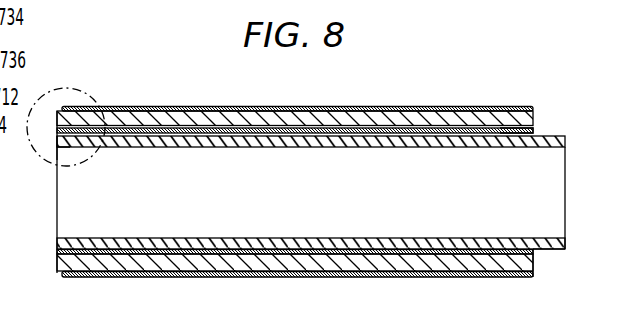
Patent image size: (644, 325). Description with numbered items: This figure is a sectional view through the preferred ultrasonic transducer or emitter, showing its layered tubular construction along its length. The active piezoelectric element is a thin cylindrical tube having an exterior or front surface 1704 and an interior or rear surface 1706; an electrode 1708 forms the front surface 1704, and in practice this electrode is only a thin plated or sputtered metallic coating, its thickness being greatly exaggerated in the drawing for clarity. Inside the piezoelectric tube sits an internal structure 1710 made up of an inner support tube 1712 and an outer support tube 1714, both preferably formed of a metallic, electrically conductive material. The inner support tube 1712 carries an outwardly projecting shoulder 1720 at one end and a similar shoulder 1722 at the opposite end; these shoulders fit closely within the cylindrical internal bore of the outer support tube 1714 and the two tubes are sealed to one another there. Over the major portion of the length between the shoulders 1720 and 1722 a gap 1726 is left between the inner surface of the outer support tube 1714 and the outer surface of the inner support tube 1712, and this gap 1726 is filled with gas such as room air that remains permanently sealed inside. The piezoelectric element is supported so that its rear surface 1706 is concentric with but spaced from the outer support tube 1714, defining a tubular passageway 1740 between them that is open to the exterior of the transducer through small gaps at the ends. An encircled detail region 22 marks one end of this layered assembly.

The detail region 22 is at (97, 98).
The exterior or front surface 1704 is at (477, 111).
The interior or rear surface 1706 is at (513, 128).
The electrode 1708 is at (403, 110).
The internal structure 1710 is at (44, 254).
The inner support tube 1712 is at (552, 258).
The outer support tube 1714 is at (472, 262).
The shoulder 1720 is at (67, 147).
The shoulder 1722 is at (527, 243).
The gap 1726 is at (278, 147).
The tubular passageway 1740 is at (267, 130).